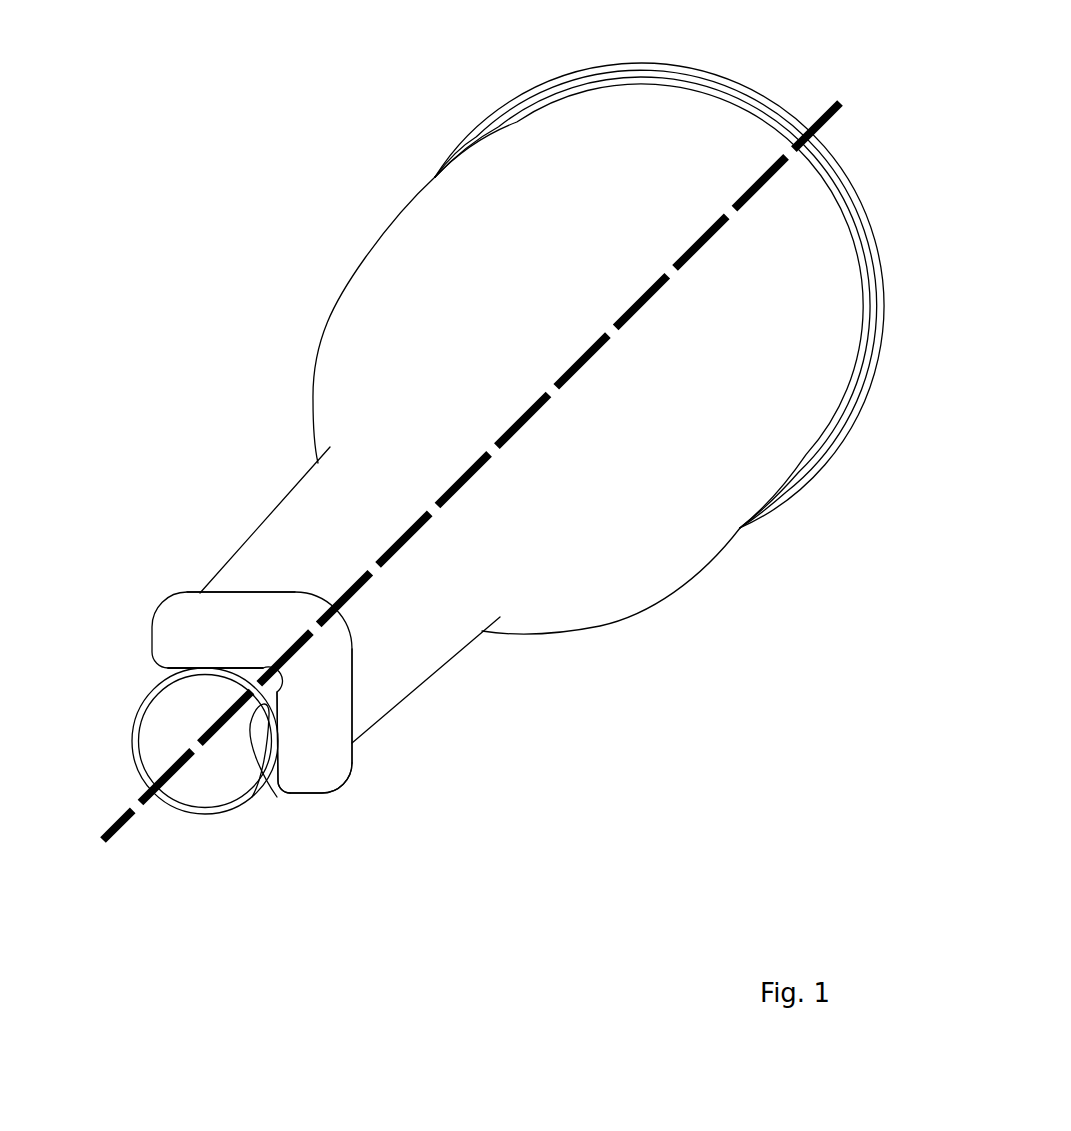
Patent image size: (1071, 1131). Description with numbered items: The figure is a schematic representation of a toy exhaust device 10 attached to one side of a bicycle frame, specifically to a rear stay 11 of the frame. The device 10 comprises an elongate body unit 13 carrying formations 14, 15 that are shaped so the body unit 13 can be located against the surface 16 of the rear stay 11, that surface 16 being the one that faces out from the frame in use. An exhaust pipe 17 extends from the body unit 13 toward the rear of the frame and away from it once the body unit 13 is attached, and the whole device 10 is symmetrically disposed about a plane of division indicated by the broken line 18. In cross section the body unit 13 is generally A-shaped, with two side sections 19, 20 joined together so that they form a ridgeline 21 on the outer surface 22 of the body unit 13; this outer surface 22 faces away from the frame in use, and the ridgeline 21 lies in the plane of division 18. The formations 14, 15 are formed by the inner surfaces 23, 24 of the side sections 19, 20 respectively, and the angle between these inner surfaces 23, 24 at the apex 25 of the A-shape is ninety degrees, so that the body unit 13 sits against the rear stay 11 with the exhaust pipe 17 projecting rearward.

The toy exhaust device 10 is at (304, 147).
The rear stay 11 is at (133, 727).
The elongate body unit 13 is at (327, 753).
The formation 14 is at (185, 618).
The formation 15 is at (305, 777).
The surface 16 is at (247, 677).
The exhaust pipe 17 is at (663, 505).
The plane of division 18 is at (822, 114).
The side section 19 is at (267, 670).
The side section 20 is at (352, 687).
The ridgeline 21 is at (363, 587).
The outer surface 22 is at (298, 593).
The inner surface 23 is at (252, 695).
The inner surface 24 is at (277, 797).
The apex 25 is at (240, 593).